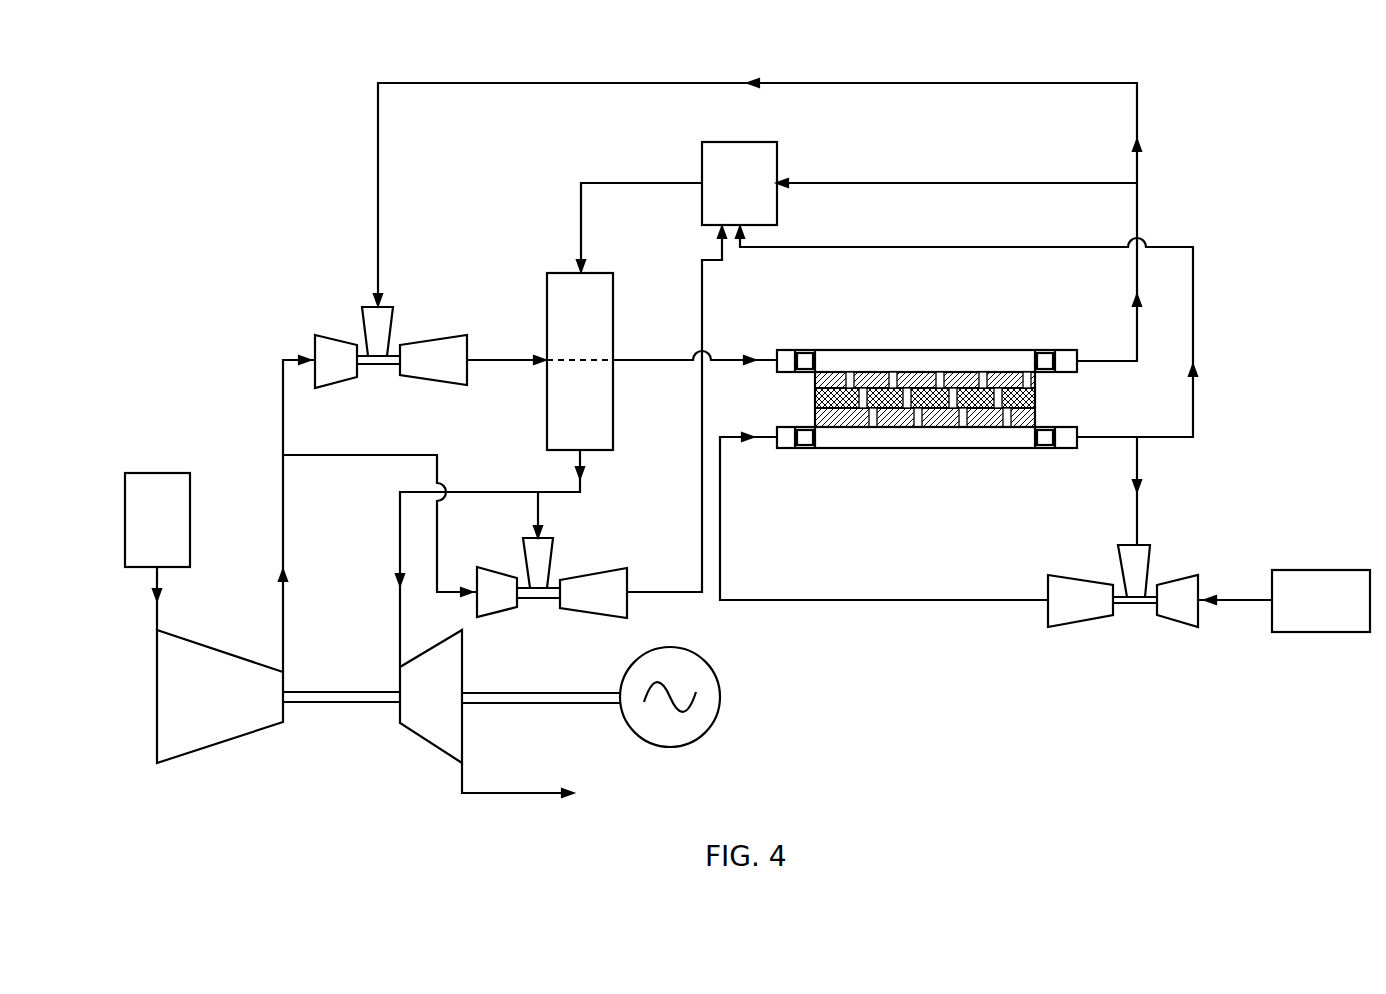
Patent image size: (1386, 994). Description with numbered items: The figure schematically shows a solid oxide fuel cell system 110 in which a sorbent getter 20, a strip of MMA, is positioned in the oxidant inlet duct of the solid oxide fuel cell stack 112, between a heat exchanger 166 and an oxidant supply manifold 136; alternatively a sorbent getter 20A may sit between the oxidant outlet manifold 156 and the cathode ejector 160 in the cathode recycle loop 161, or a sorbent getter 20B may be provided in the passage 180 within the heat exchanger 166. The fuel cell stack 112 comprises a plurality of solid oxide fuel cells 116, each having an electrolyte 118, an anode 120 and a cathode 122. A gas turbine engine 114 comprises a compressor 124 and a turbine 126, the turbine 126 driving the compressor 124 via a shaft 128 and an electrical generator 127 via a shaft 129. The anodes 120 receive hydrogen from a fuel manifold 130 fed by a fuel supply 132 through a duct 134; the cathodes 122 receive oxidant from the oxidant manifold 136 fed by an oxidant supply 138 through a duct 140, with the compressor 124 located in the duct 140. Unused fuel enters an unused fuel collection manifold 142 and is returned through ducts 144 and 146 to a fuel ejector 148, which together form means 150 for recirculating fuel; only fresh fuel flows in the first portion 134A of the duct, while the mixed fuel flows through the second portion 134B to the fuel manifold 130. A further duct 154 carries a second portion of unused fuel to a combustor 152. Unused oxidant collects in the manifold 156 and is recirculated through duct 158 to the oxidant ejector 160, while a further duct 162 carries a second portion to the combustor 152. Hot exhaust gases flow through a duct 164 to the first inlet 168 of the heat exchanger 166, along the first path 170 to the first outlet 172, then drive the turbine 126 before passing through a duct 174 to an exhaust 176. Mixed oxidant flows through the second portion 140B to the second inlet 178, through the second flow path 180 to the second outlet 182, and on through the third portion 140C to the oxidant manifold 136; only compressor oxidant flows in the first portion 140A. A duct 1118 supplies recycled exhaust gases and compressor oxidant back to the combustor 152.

The solid oxide fuel cell system 110 is at (1225, 140).
The solid oxide fuel cell stack 112 is at (1008, 350).
The gas turbine engine 114 is at (540, 602).
The solid oxide fuel cells 116 is at (947, 372).
The electrolyte 118 is at (812, 410).
The anode 120 is at (840, 428).
The cathode 122 is at (818, 377).
The compressor 124 is at (193, 737).
The turbine 126 is at (464, 677).
The electrical generator 127 is at (721, 694).
The shaft 128 is at (360, 691).
The shaft 129 is at (588, 678).
The fuel manifold 130 is at (806, 450).
The fuel supply 132 is at (1330, 550).
The duct 134 is at (940, 602).
The first portion of the duct 134A is at (1220, 596).
The second portion of the duct 134B is at (987, 598).
The oxidant manifold 136 is at (810, 350).
The oxidant supply 138 is at (152, 472).
The duct 140 is at (512, 358).
The first portion of the duct 140A is at (285, 512).
The second portion of the duct 140B is at (480, 383).
The third portion of the duct 140C is at (762, 358).
The unused fuel collection manifold 142 is at (1053, 450).
The duct 144 is at (1140, 423).
The duct 146 is at (1140, 522).
The fuel ejector 148 is at (1130, 607).
The means to recirculate unused fuel 150 is at (1032, 647).
The combustor 152 is at (752, 128).
The further duct 154 is at (1196, 300).
The unused oxidant collection manifold 156 is at (1063, 358).
The duct 158 is at (1140, 215).
The oxidant ejector 160 is at (378, 378).
The means to recirculate unused oxidant 161 is at (422, 143).
The further duct 162 is at (1005, 183).
The duct 164 is at (600, 183).
The heat exchanger 166 is at (594, 364).
The first inlet 168 is at (586, 268).
The first path 170 is at (585, 300).
The first outlet 172 is at (587, 458).
The duct 174 is at (503, 791).
The exhaust 176 is at (576, 789).
The second inlet 178 is at (546, 356).
The second flow path 180 is at (547, 375).
The second outlet 182 is at (616, 356).
The sorbent getter 20 is at (790, 350).
The sorbent getter 20A is at (1058, 350).
The sorbent getter 20B is at (604, 372).
The duct 1118 is at (700, 525).